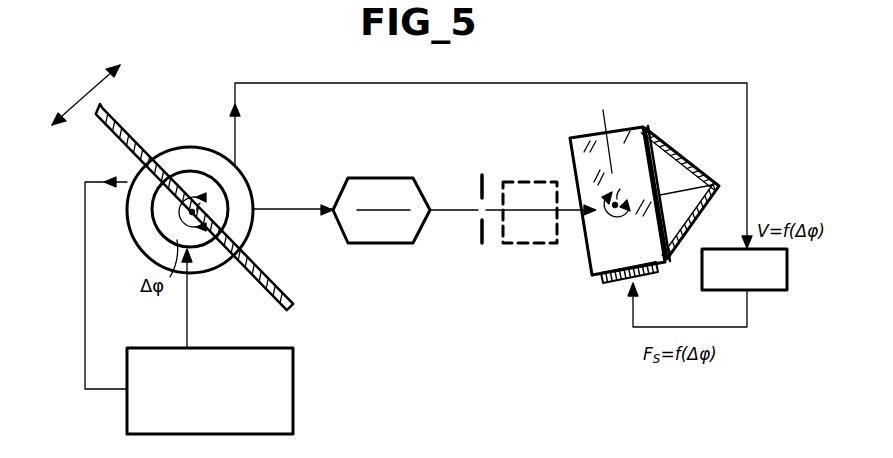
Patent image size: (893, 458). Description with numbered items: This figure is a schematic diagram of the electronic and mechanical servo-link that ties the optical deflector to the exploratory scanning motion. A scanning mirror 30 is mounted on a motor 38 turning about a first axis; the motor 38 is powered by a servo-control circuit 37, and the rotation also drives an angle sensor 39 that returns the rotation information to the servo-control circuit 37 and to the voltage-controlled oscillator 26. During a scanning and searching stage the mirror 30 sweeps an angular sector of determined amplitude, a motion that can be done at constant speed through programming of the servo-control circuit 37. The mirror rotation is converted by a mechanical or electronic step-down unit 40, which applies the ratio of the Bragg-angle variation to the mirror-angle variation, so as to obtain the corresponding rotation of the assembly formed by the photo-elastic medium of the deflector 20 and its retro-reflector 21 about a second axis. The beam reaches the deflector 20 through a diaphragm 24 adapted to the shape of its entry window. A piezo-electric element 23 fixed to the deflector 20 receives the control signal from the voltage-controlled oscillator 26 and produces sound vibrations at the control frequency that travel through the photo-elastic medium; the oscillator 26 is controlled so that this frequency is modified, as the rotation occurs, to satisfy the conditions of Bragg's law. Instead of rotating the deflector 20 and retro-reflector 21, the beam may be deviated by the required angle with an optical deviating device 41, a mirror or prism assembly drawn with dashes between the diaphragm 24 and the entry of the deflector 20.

The deflector 20 is at (585, 140).
The retro-reflector 21 is at (693, 160).
The piezo-electric element 23 is at (613, 285).
The diaphragm 24 is at (478, 240).
The voltage-controlled oscillator 26 is at (760, 291).
The mirror 30 is at (280, 282).
The servo-control circuit 37 is at (233, 348).
The motor 38 is at (147, 243).
The angle sensor 39 is at (170, 147).
The step-down unit 40 is at (377, 245).
The optical deviating device 41 is at (530, 245).